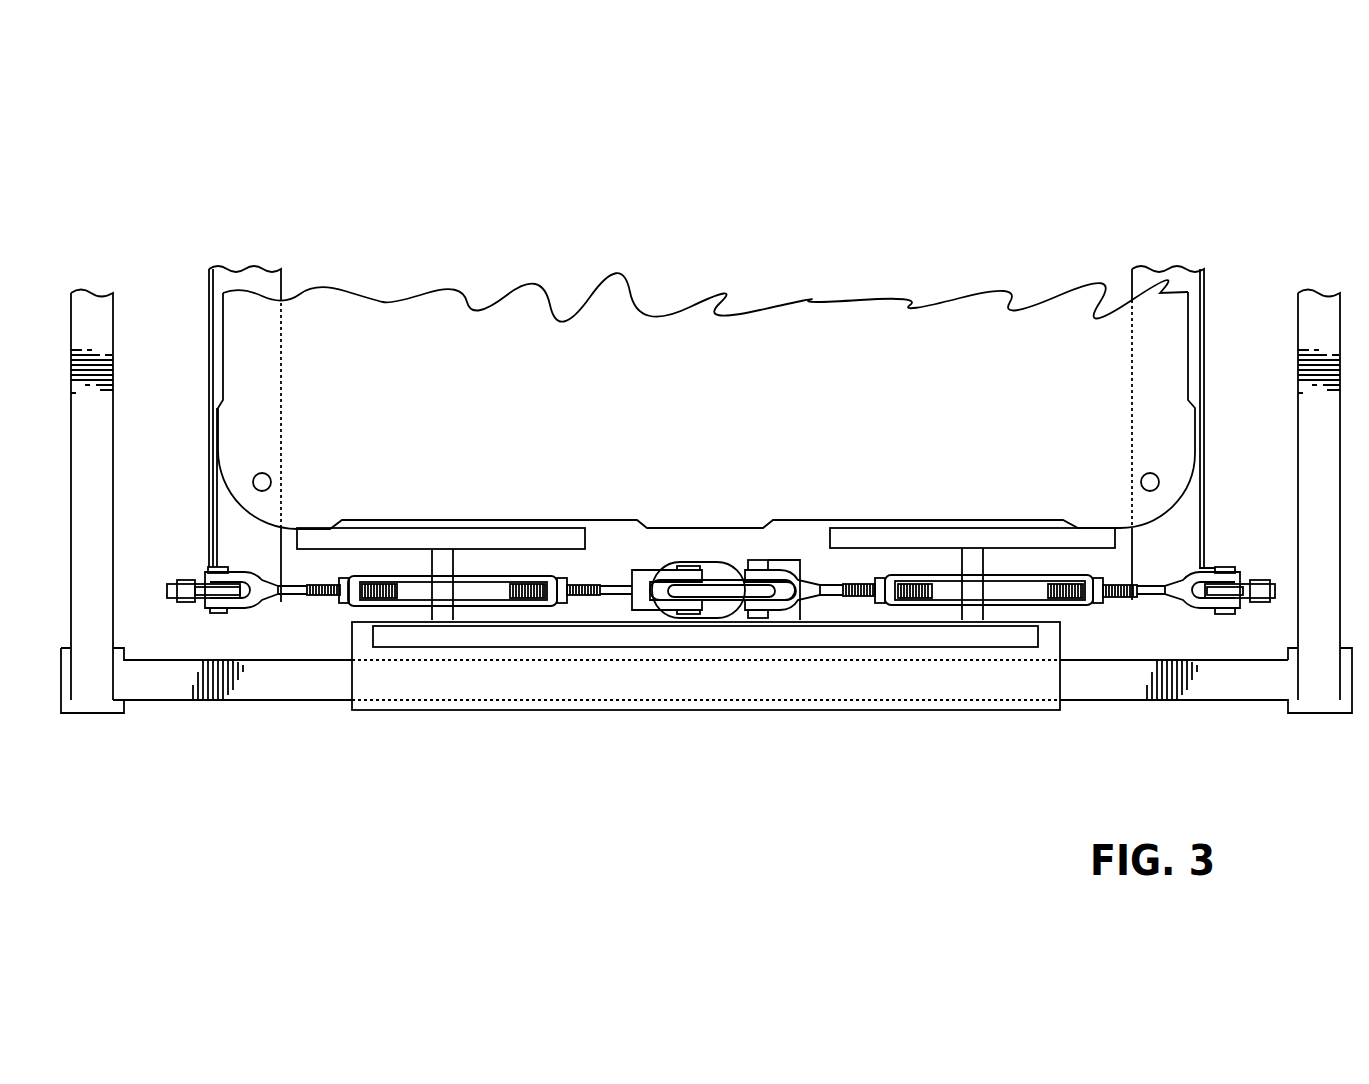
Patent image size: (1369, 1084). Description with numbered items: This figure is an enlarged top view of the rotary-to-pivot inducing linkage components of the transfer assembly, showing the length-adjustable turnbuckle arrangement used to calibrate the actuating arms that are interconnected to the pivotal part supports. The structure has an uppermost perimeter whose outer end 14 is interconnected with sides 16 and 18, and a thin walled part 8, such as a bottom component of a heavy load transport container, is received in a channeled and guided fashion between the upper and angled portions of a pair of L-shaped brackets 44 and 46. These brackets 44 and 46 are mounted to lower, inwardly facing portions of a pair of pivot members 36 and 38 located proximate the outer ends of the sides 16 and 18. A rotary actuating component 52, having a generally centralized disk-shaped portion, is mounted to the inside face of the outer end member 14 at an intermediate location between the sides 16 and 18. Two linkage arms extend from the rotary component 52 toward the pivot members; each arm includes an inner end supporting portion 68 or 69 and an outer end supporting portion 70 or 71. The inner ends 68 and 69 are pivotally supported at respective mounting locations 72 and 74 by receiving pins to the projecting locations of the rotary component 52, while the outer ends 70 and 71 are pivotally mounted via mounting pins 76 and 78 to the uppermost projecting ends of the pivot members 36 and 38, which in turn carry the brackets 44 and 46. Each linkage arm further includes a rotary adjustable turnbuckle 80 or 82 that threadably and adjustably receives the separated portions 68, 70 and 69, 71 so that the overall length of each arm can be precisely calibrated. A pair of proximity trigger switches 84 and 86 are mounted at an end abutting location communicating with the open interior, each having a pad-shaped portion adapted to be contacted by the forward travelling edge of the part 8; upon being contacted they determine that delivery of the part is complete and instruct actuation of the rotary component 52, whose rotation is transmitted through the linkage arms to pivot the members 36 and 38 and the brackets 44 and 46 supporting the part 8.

The thin walled part 8 is at (699, 385).
The outer end 14 is at (280, 685).
The side 16 is at (97, 313).
The side 18 is at (1323, 313).
The pivot member 36 is at (1276, 593).
The pivot member 38 is at (170, 590).
The L bracket 44 is at (1167, 282).
The L bracket 46 is at (259, 282).
The rotary actuating component 52 is at (720, 590).
The inner end supporting portion 68 is at (835, 590).
The inner end supporting portion 69 is at (606, 590).
The outer end supporting portion 70 is at (1155, 592).
The outer end supporting portion 71 is at (304, 592).
The mounting location 72 is at (760, 562).
The mounting location 74 is at (690, 565).
The mounting pin 76 is at (1222, 567).
The mounting pin 78 is at (222, 567).
The turnbuckle 80 is at (1018, 573).
The turnbuckle 82 is at (472, 576).
The proximity trigger switch 84 is at (970, 540).
The proximity trigger switch 86 is at (380, 540).